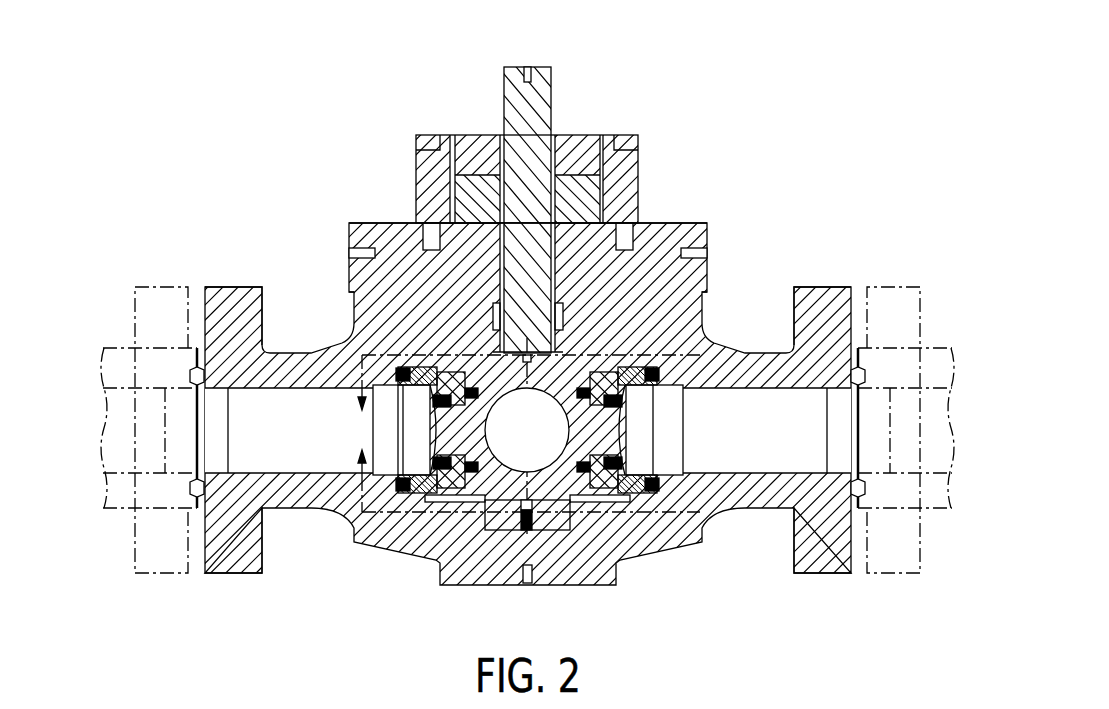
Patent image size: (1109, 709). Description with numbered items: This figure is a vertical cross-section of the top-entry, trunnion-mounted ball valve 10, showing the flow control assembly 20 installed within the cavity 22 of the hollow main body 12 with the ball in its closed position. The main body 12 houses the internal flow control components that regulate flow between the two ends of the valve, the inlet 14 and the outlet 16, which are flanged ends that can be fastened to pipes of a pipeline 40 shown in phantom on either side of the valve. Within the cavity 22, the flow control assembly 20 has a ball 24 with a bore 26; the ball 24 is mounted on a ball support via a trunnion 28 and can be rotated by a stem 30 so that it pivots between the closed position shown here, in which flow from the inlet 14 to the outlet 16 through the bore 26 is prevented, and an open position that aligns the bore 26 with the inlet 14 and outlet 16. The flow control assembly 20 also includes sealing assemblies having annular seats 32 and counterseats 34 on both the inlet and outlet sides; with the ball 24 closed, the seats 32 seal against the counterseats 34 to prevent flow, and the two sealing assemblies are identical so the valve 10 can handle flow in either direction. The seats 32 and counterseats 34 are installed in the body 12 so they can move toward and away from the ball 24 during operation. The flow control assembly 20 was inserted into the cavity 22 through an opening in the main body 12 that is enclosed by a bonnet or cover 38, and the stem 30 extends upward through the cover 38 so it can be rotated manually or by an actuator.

The valve 10 is at (554, 361).
The hollow main body 12 is at (597, 560).
The inlet 14 is at (218, 472).
The outlet 16 is at (836, 472).
The flow control assembly 20 is at (462, 500).
The cavity 22 is at (438, 500).
The ball 24 is at (553, 380).
The bore 26 is at (545, 447).
The trunnion 28 is at (505, 522).
The stem 30 is at (543, 103).
The annular seat 32 is at (440, 393).
The counterseat 34 is at (437, 372).
The cover 38 is at (673, 227).
The pipeline 40 is at (128, 362).